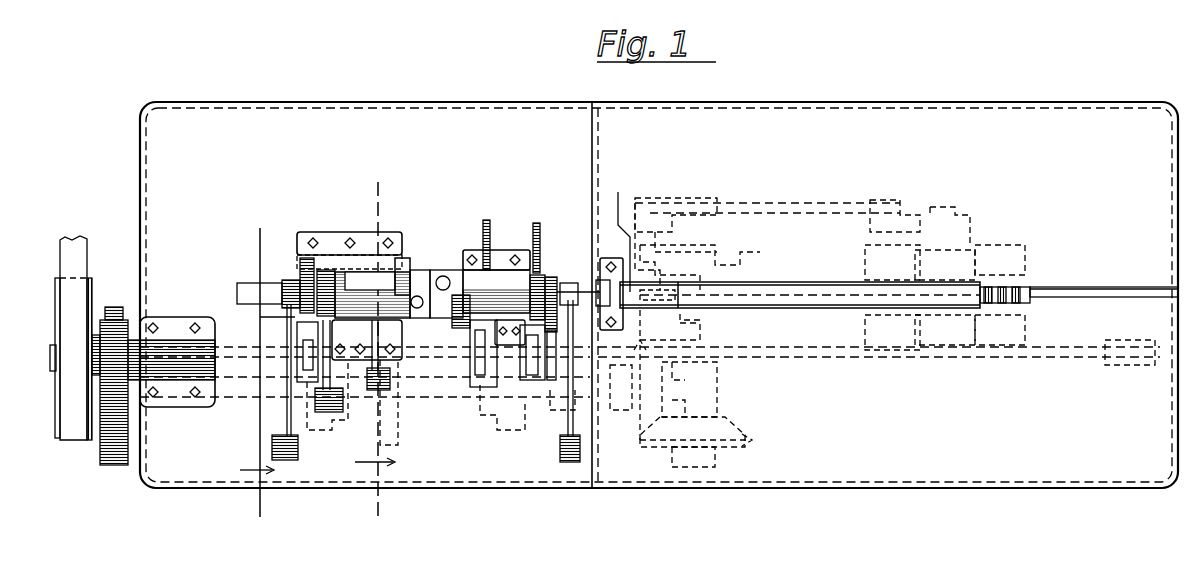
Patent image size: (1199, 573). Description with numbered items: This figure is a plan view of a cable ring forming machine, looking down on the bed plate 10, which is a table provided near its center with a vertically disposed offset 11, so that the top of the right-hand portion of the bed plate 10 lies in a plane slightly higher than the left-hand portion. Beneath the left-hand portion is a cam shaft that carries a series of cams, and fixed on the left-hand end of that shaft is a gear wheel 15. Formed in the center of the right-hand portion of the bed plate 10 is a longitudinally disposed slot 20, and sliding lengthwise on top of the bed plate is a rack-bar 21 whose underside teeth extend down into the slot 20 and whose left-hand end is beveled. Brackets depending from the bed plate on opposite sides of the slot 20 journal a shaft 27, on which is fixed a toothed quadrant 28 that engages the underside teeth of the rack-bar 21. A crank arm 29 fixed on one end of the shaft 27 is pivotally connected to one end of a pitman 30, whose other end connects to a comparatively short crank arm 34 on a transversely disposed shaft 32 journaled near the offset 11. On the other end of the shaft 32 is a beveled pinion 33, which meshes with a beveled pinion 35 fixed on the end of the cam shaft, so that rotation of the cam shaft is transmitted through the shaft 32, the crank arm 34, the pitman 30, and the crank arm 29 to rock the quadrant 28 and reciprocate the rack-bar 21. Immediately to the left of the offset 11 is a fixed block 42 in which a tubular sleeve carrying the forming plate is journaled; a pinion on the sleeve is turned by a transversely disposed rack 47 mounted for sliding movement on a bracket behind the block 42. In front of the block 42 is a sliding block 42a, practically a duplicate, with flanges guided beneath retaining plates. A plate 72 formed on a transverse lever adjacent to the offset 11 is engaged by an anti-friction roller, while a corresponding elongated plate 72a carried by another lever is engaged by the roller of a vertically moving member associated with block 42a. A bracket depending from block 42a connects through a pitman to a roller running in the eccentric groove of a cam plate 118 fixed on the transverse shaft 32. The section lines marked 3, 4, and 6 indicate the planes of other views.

The section line 3- 3 is at (432, 252).
The section line 4- 4 is at (375, 362).
The section line 6- 6 is at (257, 371).
The bed plate 10 is at (659, 295).
The offset 11 is at (592, 152).
The gear wheel 15 is at (572, 274).
The slot 20 is at (1080, 292).
The rack-bar 21 is at (805, 287).
The shaft 27 is at (955, 207).
The toothed quadrant 28 is at (1013, 304).
The crank arm 29 is at (907, 228).
The pitman 30 is at (760, 203).
The transversely disposed shaft 32 is at (693, 323).
The beveled pinion 33 is at (730, 435).
The crank arm 34 is at (668, 228).
The beveled pinion 35 is at (640, 420).
The block 42 is at (497, 283).
The block 42a is at (355, 275).
The rack 47 is at (538, 223).
The plate 72 is at (567, 422).
The elongated plate 72a is at (292, 423).
The cam plate 118 is at (722, 263).